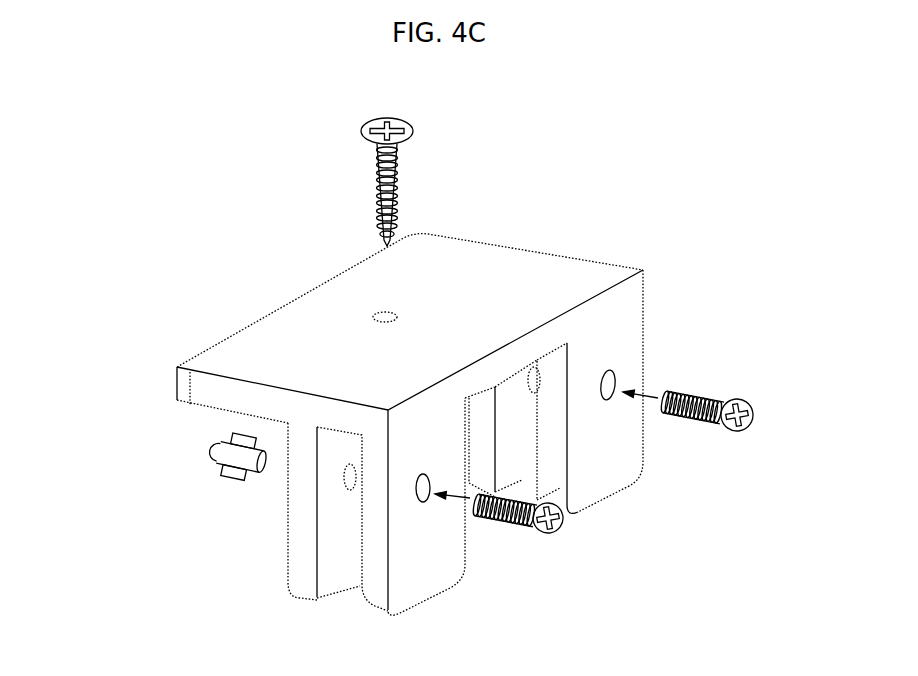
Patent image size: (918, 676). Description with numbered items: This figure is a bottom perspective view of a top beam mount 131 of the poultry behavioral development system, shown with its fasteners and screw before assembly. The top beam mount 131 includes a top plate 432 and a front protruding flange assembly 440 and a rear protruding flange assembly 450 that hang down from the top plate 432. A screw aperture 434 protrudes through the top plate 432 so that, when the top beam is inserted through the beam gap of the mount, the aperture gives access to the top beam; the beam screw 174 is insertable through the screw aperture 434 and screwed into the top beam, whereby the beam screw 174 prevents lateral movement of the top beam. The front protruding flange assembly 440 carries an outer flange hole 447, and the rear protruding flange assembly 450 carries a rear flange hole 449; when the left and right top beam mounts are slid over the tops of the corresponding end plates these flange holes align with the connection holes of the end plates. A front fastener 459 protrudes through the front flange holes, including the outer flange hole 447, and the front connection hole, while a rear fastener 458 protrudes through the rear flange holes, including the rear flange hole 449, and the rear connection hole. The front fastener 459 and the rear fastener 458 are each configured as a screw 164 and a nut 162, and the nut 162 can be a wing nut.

The top beam mount 131 is at (289, 255).
The beam screw 174 is at (357, 122).
The top plate 432 is at (547, 247).
The screw aperture 434 is at (398, 303).
The front protruding flange assembly 440 is at (448, 608).
The outer flange hole 447 is at (430, 503).
The rear outer flange hole 449 is at (610, 402).
The rear protruding flange assembly 450 is at (647, 494).
The rear fastener 458 is at (771, 430).
The front fastener 459 is at (588, 540).
The nut 162 is at (208, 452).
The screw 164 is at (755, 400).